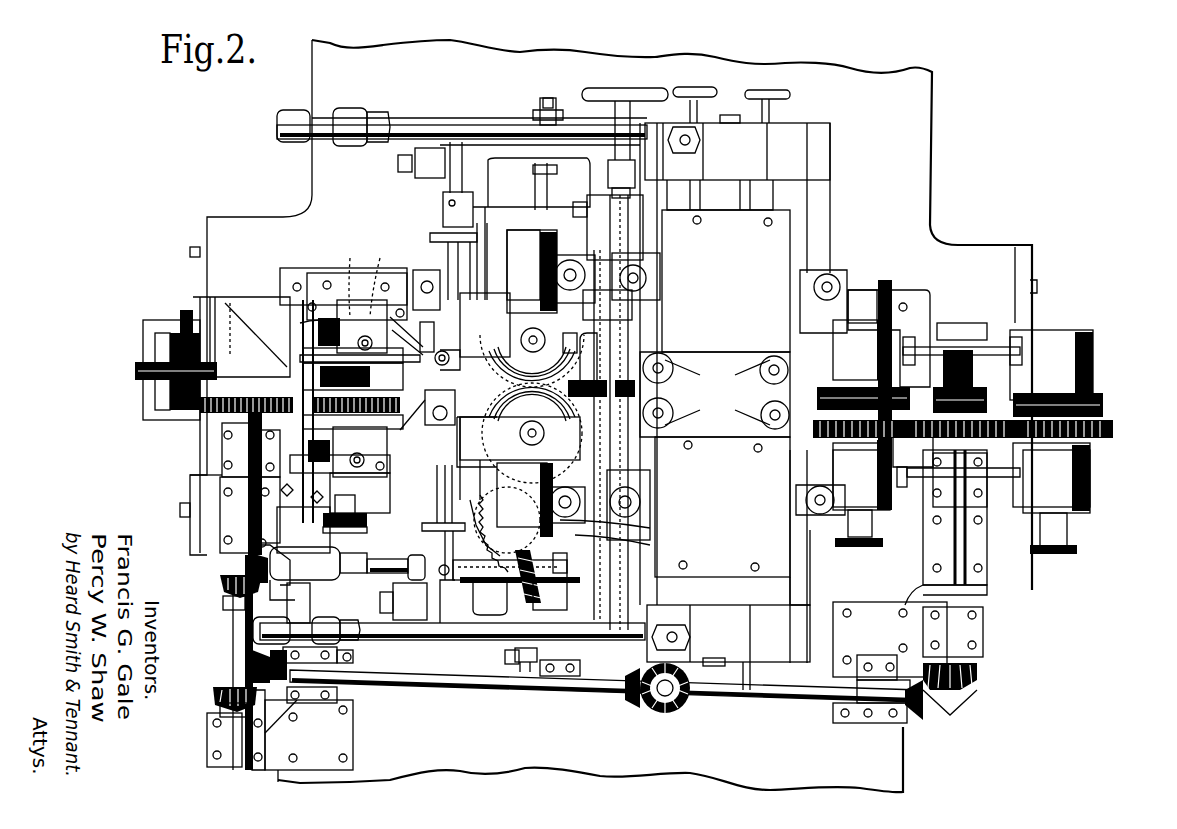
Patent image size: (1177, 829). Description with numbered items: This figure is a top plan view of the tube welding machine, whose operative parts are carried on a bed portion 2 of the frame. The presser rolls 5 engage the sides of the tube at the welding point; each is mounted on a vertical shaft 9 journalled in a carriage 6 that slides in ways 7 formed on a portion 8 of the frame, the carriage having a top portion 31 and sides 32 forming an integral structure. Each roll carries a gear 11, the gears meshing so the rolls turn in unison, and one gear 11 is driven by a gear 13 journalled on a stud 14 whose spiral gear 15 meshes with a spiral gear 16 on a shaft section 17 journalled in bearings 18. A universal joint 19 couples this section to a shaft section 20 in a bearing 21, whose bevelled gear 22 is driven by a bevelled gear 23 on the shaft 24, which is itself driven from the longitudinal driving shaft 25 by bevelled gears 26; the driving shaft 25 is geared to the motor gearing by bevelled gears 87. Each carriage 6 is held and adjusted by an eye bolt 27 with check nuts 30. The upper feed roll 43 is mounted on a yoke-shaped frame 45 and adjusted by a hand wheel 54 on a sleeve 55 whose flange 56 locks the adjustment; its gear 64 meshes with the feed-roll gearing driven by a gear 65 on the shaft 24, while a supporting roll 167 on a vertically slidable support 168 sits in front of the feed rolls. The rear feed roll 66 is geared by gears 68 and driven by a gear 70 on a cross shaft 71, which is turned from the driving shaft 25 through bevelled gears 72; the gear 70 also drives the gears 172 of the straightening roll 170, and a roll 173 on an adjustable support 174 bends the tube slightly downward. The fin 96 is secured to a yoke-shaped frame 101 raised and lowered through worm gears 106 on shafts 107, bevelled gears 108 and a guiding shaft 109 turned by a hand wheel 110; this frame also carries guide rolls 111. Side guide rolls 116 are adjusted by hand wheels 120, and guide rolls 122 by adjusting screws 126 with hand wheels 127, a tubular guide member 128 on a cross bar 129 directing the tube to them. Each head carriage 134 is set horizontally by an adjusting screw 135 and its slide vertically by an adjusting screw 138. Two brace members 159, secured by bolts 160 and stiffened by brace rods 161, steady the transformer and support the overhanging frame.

The bed portion 2 is at (268, 238).
The presser rolls 5 is at (532, 403).
The carriage 6 is at (503, 207).
The ways 7 is at (445, 208).
The portion of the frame 8 is at (475, 143).
The vertical shaft 9 is at (545, 338).
The gear 11 is at (562, 343).
The gear 13 is at (620, 523).
The stud 14 is at (627, 543).
The spiral gear 15 is at (575, 564).
The spiral gear 16 is at (538, 581).
The shaft section 17 is at (505, 529).
The bearings 18 is at (525, 597).
The universal joint 19 is at (440, 565).
The shaft section 20 is at (395, 558).
The bearing 21 is at (301, 593).
The bevelled gear 22 is at (290, 590).
The bevelled gear 23 is at (222, 585).
The shaft 24 is at (235, 622).
The driving shaft 25 is at (450, 690).
The bevelled gears 26 is at (222, 690).
The eye bolt 27 is at (545, 97).
The check nuts 30 is at (556, 113).
The top portion 31 is at (520, 396).
The sides 32 is at (478, 267).
The upper feed roll 43 is at (312, 356).
The yoke-shaped frame 45 is at (295, 275).
The hand wheel 54 is at (1090, 553).
The sleeve 55 is at (325, 525).
The flange 56 is at (385, 478).
The gear 64 is at (365, 406).
The gear 65 is at (220, 410).
The rear feed roll 66 is at (830, 370).
The gear 68 is at (820, 393).
The gear 70 is at (945, 418).
The cross shaft 71 is at (975, 596).
The bevelled gears 72 is at (958, 700).
The bevelled gears 87 is at (655, 712).
The fin 96 is at (213, 367).
The yoke-shaped frame 101 is at (420, 382).
The worm gear 106 is at (371, 295).
The shaft 107 is at (354, 277).
The bevelled gears 108 is at (300, 324).
The guiding shaft 109 is at (308, 392).
The hand wheel 110 is at (310, 513).
The guide rolls 111 is at (458, 346).
The guide rolls 116 is at (422, 356).
The hand wheel 120 is at (433, 236).
The guide rolls 122 is at (758, 388).
The adjusting screw 126 is at (700, 110).
The hand wheel 127 is at (748, 90).
The tubular guide member 128 is at (605, 375).
The cross bar 129 is at (640, 352).
The carriage 134 is at (620, 243).
The adjusting screw 135 is at (630, 112).
The adjusting screw 138 is at (565, 262).
The brace members 159 is at (800, 157).
The bolts 160 is at (745, 122).
The brace rods 161 is at (410, 124).
The supporting roll 167 is at (145, 365).
The support 168 is at (160, 333).
The straightening roll 170 is at (1100, 400).
The gears 172 is at (1113, 431).
The roll 173 is at (960, 390).
The support 174 is at (960, 352).